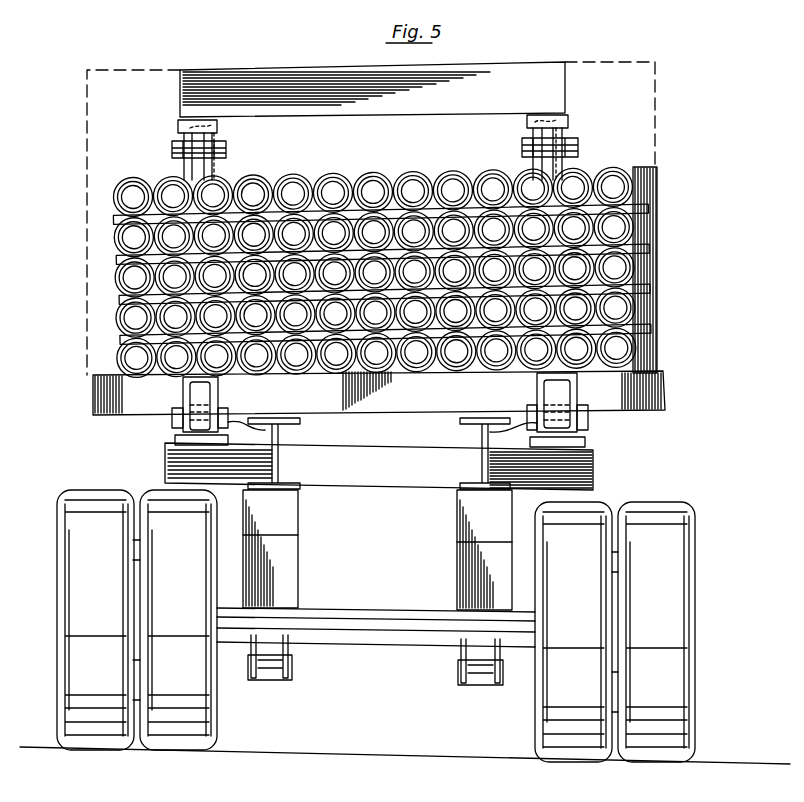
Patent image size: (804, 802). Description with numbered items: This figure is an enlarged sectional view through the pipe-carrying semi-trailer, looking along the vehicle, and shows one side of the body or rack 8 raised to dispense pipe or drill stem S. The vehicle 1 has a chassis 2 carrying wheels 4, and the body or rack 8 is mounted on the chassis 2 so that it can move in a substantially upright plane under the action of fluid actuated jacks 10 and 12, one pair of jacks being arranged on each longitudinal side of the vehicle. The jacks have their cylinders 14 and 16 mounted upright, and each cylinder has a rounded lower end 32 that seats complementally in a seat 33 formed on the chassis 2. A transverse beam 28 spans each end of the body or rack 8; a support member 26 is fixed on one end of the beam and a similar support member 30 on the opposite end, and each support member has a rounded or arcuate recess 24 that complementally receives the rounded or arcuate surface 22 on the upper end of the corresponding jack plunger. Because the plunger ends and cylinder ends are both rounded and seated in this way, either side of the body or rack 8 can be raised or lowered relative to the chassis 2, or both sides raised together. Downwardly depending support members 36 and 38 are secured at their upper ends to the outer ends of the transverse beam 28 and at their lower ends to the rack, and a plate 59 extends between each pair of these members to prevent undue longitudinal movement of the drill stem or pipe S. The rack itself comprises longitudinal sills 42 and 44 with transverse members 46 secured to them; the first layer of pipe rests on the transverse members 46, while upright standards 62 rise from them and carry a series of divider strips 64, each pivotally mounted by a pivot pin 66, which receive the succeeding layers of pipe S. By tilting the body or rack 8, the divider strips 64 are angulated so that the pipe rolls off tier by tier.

The vehicle 1 is at (609, 476).
The chassis 2 is at (379, 454).
The wheels 4 is at (172, 750).
The body or rack 8 is at (403, 397).
The fluid actuated jack 10 is at (175, 127).
The fluid actuated jack 12 is at (570, 142).
The cylinder 14 is at (193, 411).
The cylinder 16 is at (560, 416).
The rounded or arcuate surface 22 is at (222, 120).
The rounded or arcuate recess 24 is at (212, 127).
The support member 26 is at (192, 120).
The transverse beam 28 is at (512, 68).
The support member 30 is at (570, 124).
The rounded end 32 is at (585, 443).
The seat 33 is at (541, 470).
The support member 36 is at (186, 172).
The support member 38 is at (576, 161).
The longitudinal sill 42 is at (218, 392).
The longitudinal sill 44 is at (537, 402).
The transverse member 46 is at (657, 382).
The plate 59 is at (658, 132).
The upright standard 62 is at (416, 271).
The divider strip 64 is at (645, 200).
The pivot pin 66 is at (650, 250).
The drill stem or pipe S is at (431, 158).